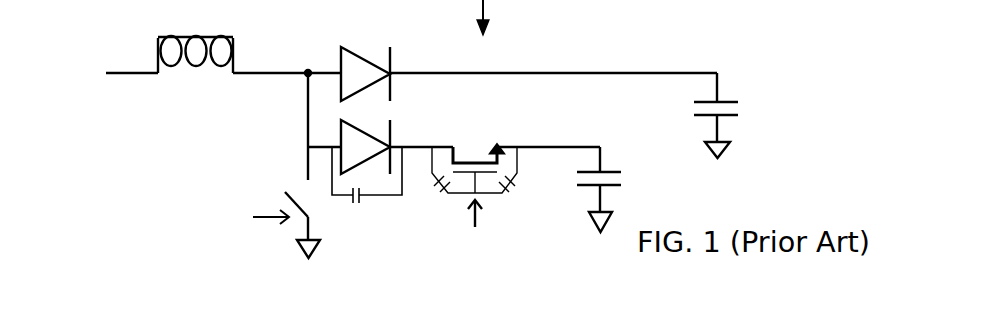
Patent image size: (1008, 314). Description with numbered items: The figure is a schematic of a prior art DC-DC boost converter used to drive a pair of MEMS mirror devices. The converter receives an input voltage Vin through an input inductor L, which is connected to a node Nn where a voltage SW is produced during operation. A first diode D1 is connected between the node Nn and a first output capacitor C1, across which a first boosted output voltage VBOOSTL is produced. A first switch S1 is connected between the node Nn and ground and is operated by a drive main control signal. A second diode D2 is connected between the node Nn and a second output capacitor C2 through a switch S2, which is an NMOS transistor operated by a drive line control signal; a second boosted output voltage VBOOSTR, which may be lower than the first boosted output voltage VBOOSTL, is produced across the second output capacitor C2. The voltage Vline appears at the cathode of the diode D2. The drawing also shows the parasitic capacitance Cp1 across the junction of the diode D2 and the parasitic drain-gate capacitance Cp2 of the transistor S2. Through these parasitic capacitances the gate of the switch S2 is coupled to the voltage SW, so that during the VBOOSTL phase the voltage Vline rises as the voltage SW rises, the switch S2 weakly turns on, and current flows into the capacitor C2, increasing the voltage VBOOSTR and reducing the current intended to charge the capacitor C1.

The input voltage Vin is at (114, 73).
The input inductor L is at (195, 41).
The voltage SW is at (287, 62).
The node Nn is at (290, 126).
The first diode D1 is at (365, 74).
The second diode D2 is at (349, 147).
The first boosted output voltage VBOOSTL is at (576, 62).
The second boosted output voltage VBOOSTR is at (572, 134).
The first output capacitor C1 is at (702, 115).
The second output capacitor C2 is at (585, 189).
The voltage Vline is at (421, 135).
The first switch S1 is at (304, 222).
The switch S2 is at (478, 150).
The parasitic capacitance across the junction of diode D2 Cp1 is at (367, 190).
The parasitic drain-gate capacitance Cp2 is at (462, 183).